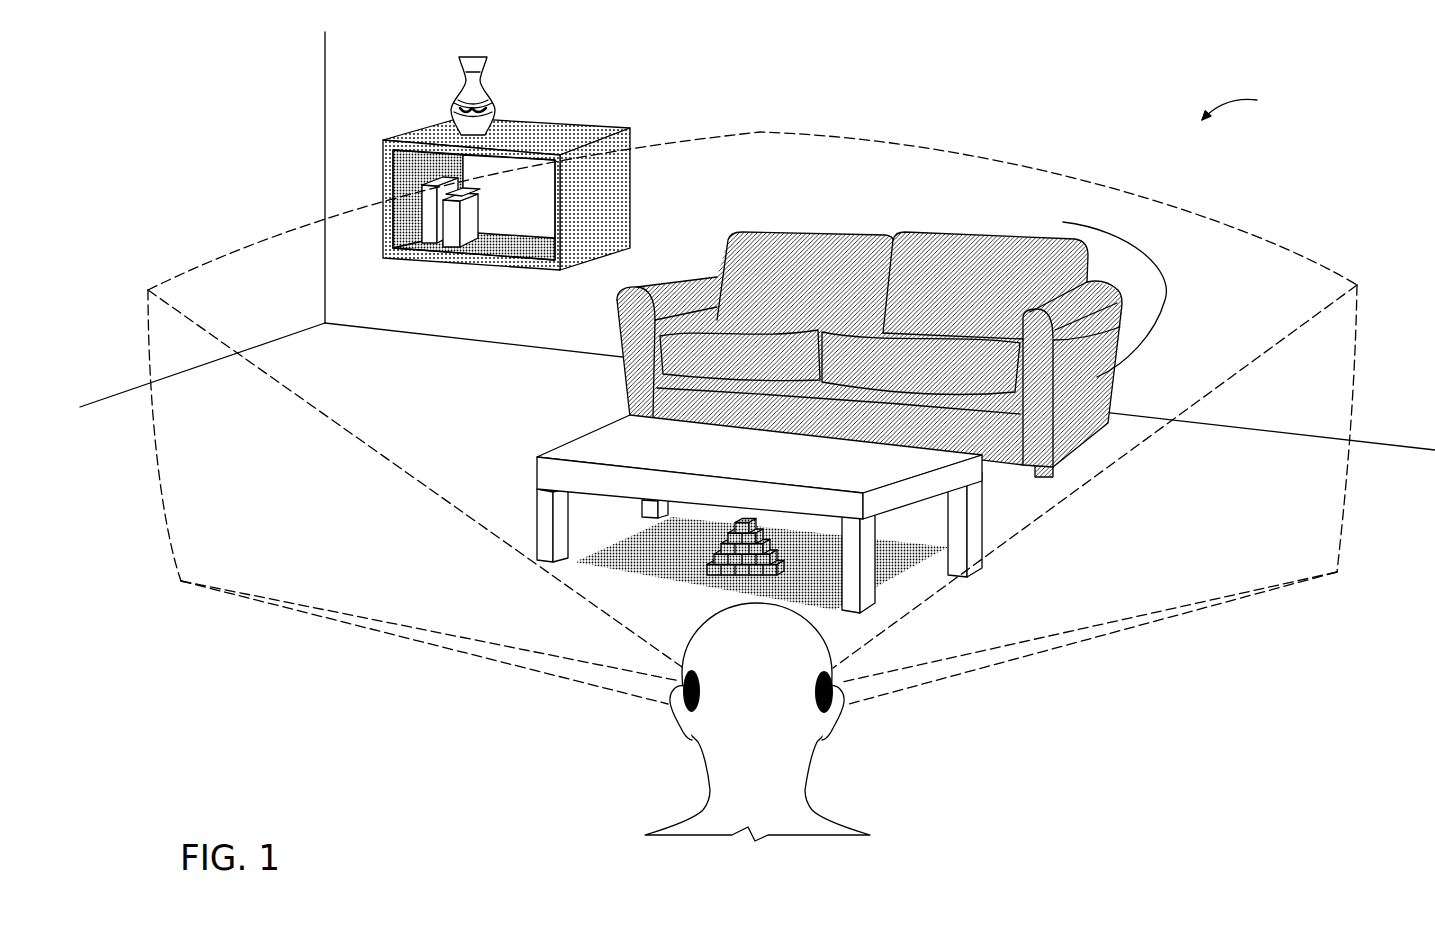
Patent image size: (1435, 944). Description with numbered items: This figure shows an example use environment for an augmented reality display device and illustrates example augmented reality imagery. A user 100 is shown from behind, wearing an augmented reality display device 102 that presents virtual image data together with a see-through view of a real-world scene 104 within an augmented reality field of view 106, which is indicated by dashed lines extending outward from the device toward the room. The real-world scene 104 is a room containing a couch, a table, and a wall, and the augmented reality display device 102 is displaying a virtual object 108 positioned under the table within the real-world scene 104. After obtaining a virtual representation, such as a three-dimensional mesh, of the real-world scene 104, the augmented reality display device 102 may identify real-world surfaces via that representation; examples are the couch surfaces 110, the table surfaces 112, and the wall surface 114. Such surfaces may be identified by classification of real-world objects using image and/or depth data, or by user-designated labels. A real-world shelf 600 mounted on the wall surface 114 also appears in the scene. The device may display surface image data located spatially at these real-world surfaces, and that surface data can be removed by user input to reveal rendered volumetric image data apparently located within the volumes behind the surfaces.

The user 100 is at (770, 700).
The augmented reality display device 102 is at (687, 733).
The real-world scene 104 is at (1248, 106).
The augmented reality field of view 106 is at (1185, 212).
The virtual object 108 is at (720, 552).
The couch surfaces 110 is at (737, 357).
The table surfaces 112 is at (642, 490).
The wall surface 114 is at (943, 107).
The real-world shelf 600 is at (545, 122).